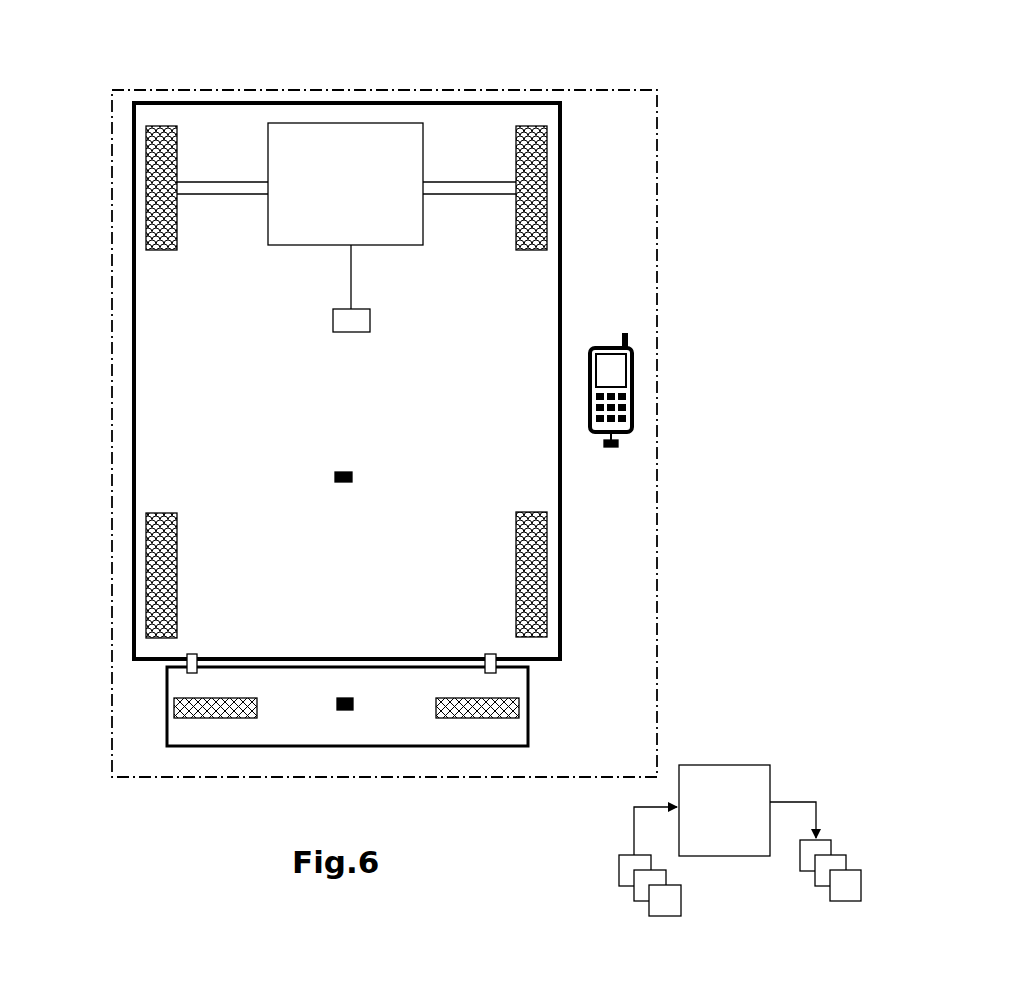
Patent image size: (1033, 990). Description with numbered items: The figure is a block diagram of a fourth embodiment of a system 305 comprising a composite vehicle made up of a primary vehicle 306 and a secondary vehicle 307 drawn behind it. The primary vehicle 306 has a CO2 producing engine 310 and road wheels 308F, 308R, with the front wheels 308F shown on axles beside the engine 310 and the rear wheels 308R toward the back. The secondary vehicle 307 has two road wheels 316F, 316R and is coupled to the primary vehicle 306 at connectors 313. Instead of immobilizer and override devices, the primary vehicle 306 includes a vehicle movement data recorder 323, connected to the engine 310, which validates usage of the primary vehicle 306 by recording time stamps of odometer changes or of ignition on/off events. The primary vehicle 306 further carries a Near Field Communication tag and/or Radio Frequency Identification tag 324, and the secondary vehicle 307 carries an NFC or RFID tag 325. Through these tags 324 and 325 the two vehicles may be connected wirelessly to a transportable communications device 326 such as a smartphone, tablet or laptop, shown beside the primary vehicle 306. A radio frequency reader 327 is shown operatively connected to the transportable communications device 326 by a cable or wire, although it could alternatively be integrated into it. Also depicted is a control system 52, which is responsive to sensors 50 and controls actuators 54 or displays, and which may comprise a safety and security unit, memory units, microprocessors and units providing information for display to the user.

The system 305 is at (163, 88).
The primary vehicle 306 is at (133, 330).
The secondary vehicle 307 is at (165, 694).
The road wheels 308F is at (150, 188).
The road wheels 308R is at (150, 535).
The CO2 producing engine 310 is at (346, 184).
The trailer hitch connectors 313 is at (194, 655).
The road wheel 316F is at (198, 718).
The road wheel 316R is at (482, 718).
The vehicle movement data recorder 323 is at (333, 321).
The NFC tag and/or RFID tag 324 is at (335, 475).
The NFC tag or RFID tag 325 is at (337, 704).
The transportable communications device 326 is at (608, 345).
The radio frequency reader 327 is at (610, 450).
The control system 52 is at (724, 810).
The sensors 50 is at (652, 887).
The actuators 54 is at (824, 877).